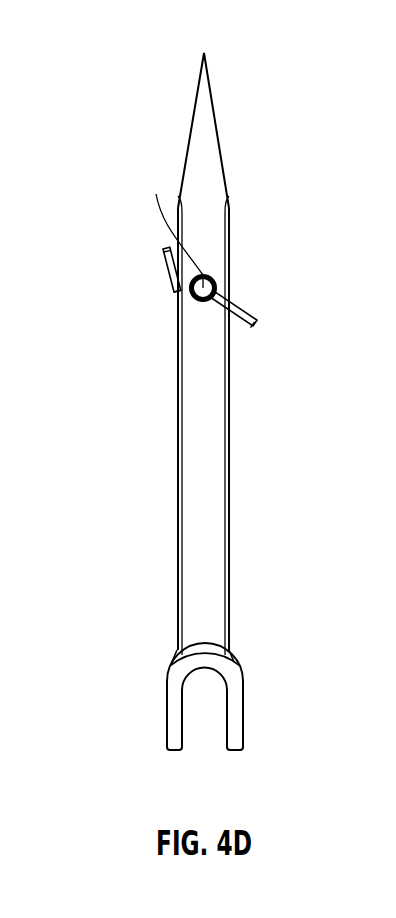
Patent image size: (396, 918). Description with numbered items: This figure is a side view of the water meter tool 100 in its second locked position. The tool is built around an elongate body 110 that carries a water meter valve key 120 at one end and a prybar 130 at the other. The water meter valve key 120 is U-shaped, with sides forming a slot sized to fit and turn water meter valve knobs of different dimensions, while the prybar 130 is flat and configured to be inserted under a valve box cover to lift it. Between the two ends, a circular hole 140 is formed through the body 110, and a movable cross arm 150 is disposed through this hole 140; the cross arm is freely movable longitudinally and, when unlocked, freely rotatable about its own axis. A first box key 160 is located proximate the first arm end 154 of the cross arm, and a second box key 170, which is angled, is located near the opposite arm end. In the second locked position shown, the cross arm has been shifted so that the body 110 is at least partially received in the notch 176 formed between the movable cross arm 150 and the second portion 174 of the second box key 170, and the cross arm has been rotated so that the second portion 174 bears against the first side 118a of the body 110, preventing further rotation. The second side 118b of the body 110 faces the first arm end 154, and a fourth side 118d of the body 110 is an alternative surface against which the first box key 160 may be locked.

The water meter tool 100 is at (311, 49).
The body 110 is at (157, 526).
The first side 118a is at (178, 598).
The second side 118b is at (213, 430).
The fourth side 118d is at (229, 600).
The water meter valve key 120 is at (156, 721).
The prybar 130 is at (205, 148).
The hole 140 is at (215, 276).
The movable cross arm 150 is at (192, 312).
The first arm end 154 is at (170, 220).
The first box key 160 is at (256, 301).
The second box key 170 is at (139, 270).
The second portion 174 is at (163, 262).
The notch 176 is at (175, 295).